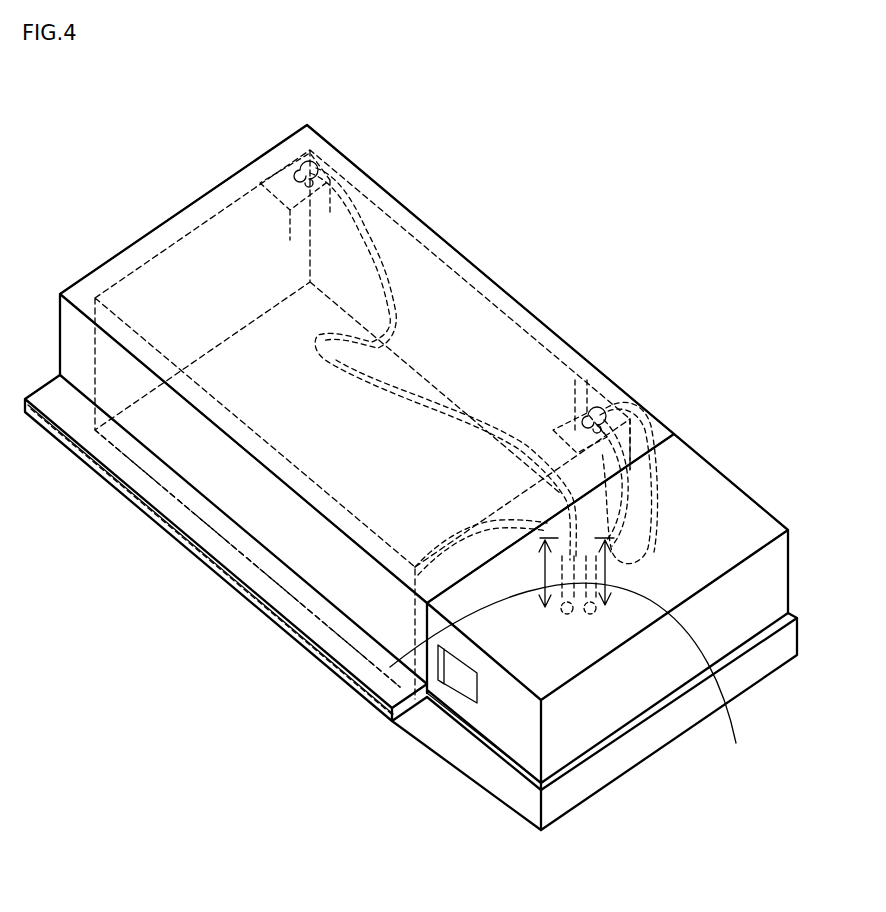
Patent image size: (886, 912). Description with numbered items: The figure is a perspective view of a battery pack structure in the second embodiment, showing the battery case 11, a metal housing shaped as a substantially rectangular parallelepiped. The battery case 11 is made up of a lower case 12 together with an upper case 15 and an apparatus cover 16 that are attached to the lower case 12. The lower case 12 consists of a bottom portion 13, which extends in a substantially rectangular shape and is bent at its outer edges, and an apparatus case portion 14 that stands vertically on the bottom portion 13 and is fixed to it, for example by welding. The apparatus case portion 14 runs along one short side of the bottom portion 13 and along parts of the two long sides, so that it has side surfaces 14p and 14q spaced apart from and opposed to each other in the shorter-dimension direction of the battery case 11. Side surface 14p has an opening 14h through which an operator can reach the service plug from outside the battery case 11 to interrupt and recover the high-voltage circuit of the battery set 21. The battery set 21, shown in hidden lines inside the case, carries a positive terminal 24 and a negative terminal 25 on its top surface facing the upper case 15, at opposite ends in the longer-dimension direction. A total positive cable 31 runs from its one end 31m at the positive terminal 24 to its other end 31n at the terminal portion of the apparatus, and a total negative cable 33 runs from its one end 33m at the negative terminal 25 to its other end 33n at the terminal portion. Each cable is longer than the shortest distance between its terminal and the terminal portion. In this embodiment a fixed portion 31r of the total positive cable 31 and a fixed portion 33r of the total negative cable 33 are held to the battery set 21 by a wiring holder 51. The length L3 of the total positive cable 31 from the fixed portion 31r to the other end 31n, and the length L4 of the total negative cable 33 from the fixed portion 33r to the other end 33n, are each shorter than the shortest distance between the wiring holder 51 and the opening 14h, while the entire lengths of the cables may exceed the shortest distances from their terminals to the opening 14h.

The battery case 11 is at (96, 248).
The lower case 12 is at (712, 836).
The bottom portion 13 is at (625, 762).
The apparatus case portion 14 is at (648, 670).
The opening 14h is at (447, 690).
The side surface 14p is at (492, 718).
The side surface 14q is at (782, 528).
The upper case 15 is at (226, 192).
The apparatus cover 16 is at (730, 522).
The battery set 21 is at (178, 222).
The positive terminal 24 is at (265, 170).
The negative terminal 25 is at (605, 400).
The total positive cable 31 is at (388, 277).
The one end of total positive cable 31m is at (297, 168).
The other end of total positive cable 31n is at (566, 622).
The fixed portion of total positive cable 31r is at (318, 657).
The total negative cable 33 is at (653, 517).
The one end of total negative cable 33m is at (590, 408).
The other end of total negative cable 33n is at (592, 620).
The fixed portion of total negative cable 33r is at (642, 470).
The wiring holder 51 is at (647, 520).
The length of total positive cable from fixed portion to other end L3 is at (376, 684).
The length of total negative cable from fixed portion to other end L4 is at (568, 659).